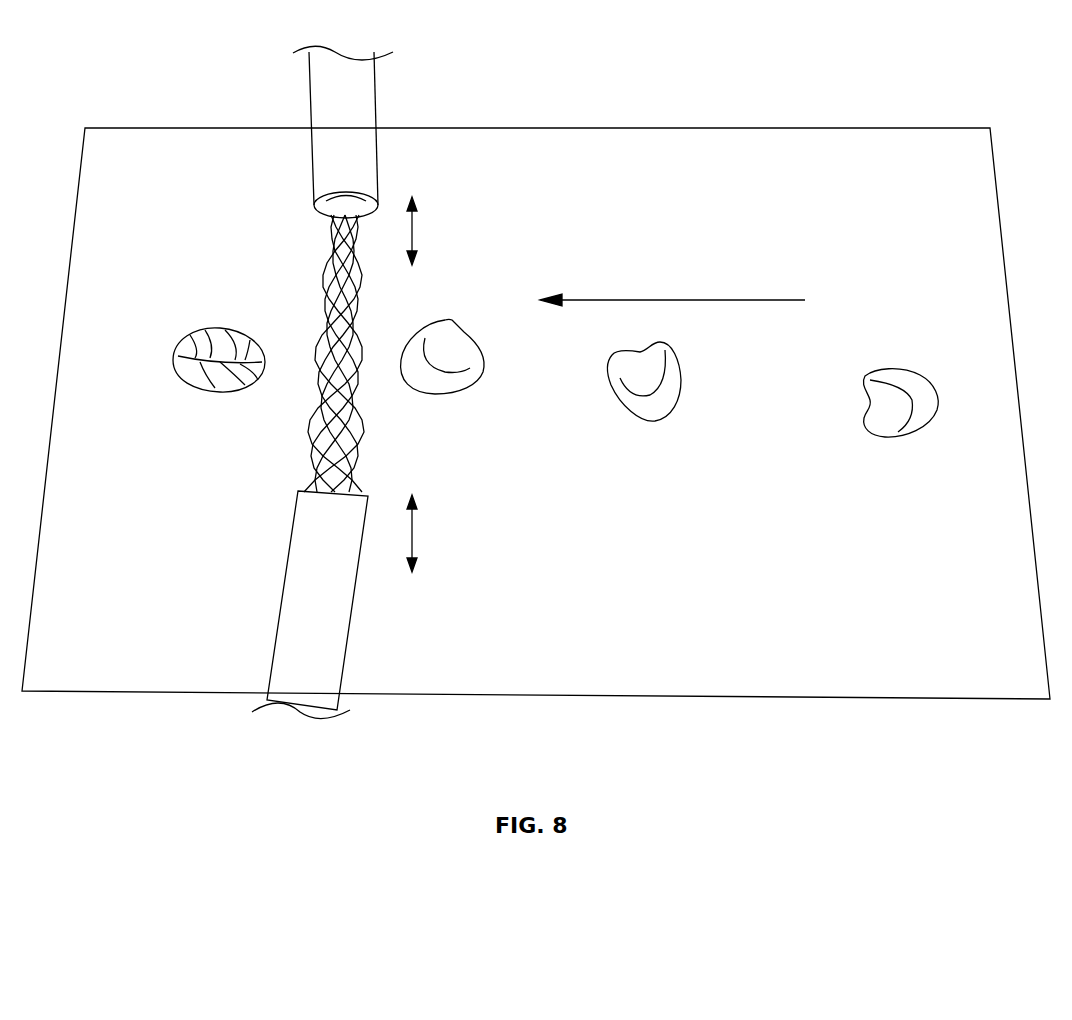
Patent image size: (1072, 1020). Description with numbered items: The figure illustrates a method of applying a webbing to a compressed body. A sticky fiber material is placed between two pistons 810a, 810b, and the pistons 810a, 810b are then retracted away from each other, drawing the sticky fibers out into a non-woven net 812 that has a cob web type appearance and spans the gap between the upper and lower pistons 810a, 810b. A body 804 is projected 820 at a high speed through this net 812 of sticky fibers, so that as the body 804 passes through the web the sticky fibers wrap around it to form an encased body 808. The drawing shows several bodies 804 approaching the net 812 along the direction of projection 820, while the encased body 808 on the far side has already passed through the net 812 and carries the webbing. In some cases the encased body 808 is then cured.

The body 804 is at (455, 319).
The encased body 808 is at (216, 328).
The piston 810a is at (378, 176).
The piston 810b is at (356, 597).
The non-woven net 812 is at (326, 266).
The projection 820 is at (672, 299).